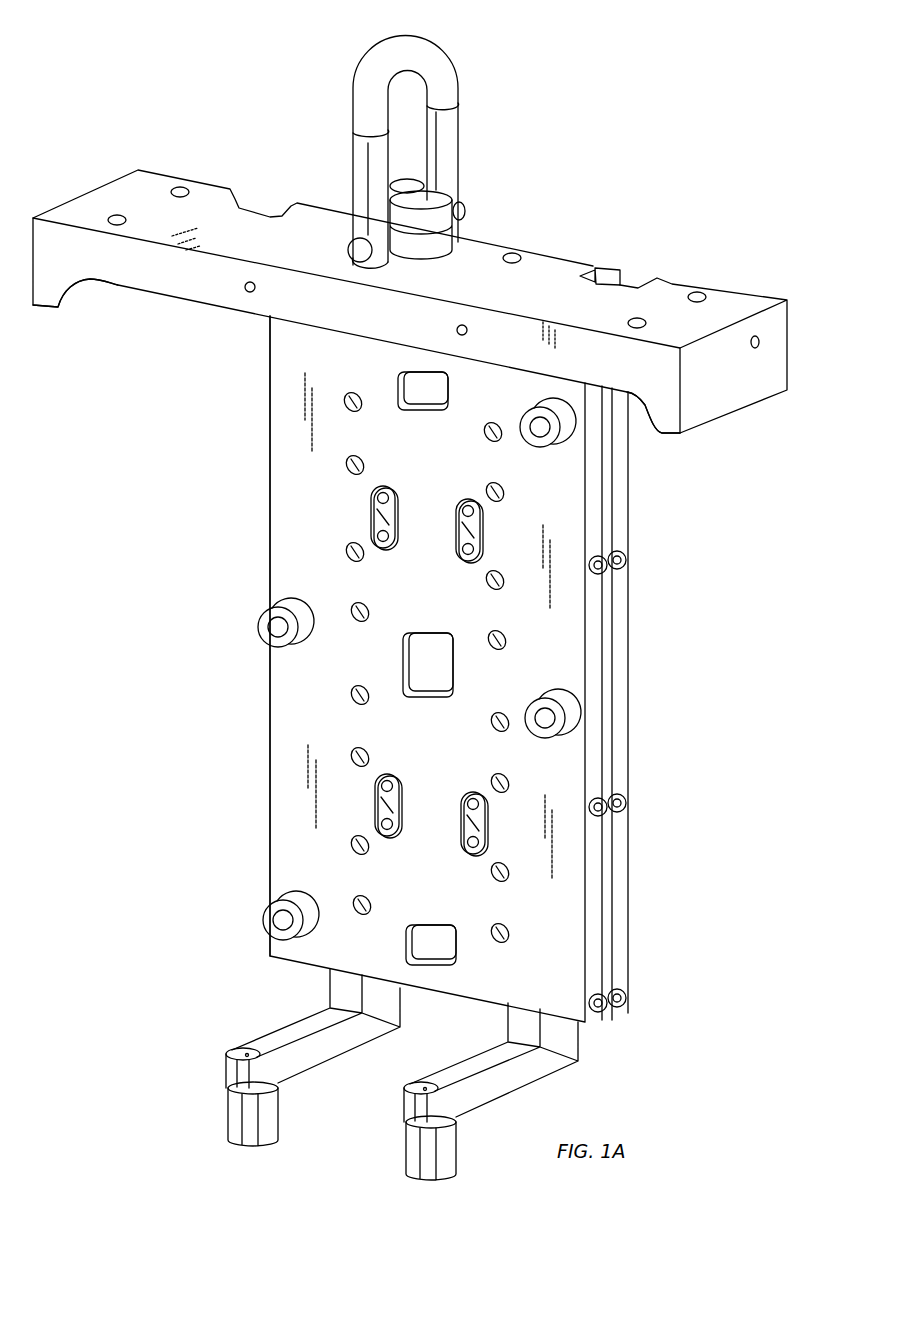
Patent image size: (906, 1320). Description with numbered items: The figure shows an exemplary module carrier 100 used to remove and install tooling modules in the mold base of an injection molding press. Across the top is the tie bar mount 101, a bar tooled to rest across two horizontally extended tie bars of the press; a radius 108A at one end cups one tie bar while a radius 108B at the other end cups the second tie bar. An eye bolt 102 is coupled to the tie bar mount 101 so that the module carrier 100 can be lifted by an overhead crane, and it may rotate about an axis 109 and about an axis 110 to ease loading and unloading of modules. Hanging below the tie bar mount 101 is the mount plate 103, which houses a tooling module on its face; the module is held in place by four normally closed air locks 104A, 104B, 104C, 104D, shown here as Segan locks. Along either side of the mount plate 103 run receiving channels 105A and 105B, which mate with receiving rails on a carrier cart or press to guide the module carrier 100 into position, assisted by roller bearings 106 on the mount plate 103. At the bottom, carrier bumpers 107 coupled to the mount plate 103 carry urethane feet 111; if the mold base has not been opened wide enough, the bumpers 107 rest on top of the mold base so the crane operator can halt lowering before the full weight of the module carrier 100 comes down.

The module carrier 100 is at (613, 178).
The tie bar mount 101 is at (562, 270).
The eye bolt 102 is at (446, 148).
The mount plate 103 is at (288, 465).
The air lock 104A is at (262, 925).
The air lock 104B is at (536, 738).
The air lock 104C is at (262, 645).
The air lock 104D is at (534, 447).
The receiving channel 105A is at (612, 650).
The receiving channel 105B is at (270, 520).
The roller bearings 106 is at (630, 553).
The carrier bumpers 107 is at (282, 1033).
The radius 108A is at (92, 296).
The radius 108B is at (643, 427).
The axis 109 is at (443, 196).
The axis 110 is at (348, 250).
The urethane feet 111 is at (248, 1117).